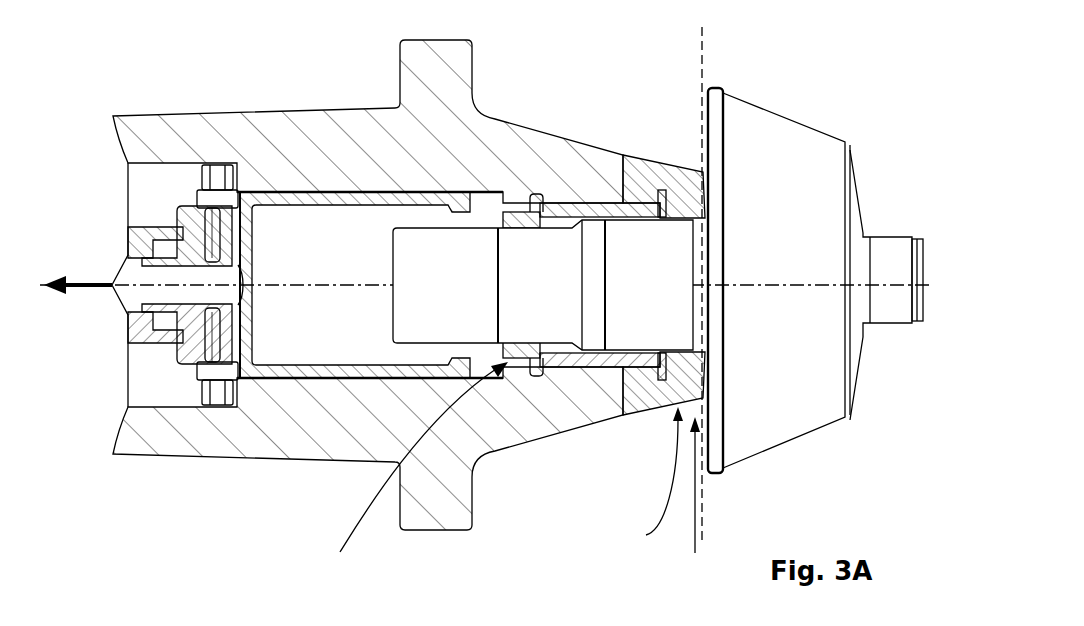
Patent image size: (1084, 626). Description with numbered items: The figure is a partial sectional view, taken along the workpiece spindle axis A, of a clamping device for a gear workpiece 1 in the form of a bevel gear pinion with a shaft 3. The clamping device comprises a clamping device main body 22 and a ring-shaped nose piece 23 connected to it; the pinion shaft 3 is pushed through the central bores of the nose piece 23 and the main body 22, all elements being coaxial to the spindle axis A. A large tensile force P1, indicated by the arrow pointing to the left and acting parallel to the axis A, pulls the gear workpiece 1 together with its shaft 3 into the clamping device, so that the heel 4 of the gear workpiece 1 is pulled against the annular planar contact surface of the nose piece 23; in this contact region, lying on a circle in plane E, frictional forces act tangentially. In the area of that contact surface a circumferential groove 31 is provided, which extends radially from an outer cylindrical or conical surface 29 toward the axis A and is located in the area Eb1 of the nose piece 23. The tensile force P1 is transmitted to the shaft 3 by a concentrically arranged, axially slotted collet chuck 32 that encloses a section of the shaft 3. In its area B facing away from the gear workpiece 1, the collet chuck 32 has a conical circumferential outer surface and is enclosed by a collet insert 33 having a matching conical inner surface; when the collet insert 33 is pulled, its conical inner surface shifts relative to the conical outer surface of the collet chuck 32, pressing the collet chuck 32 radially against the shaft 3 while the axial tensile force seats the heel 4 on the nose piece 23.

The gear workpiece 1 is at (768, 118).
The shaft 3 is at (559, 252).
The heel 4 is at (703, 117).
The clamping device main body 22 is at (297, 120).
The nose piece 23 is at (643, 398).
The outer cylindrical or conical surface 29 is at (680, 185).
The circumferential groove 31 is at (650, 480).
The collet chuck 32 is at (560, 347).
The collet insert 33 is at (322, 373).
The workpiece spindle axis A is at (498, 285).
The plane E is at (710, 274).
The area Eb1 is at (689, 499).
The area B is at (423, 471).
The tensile force P1 is at (78, 271).